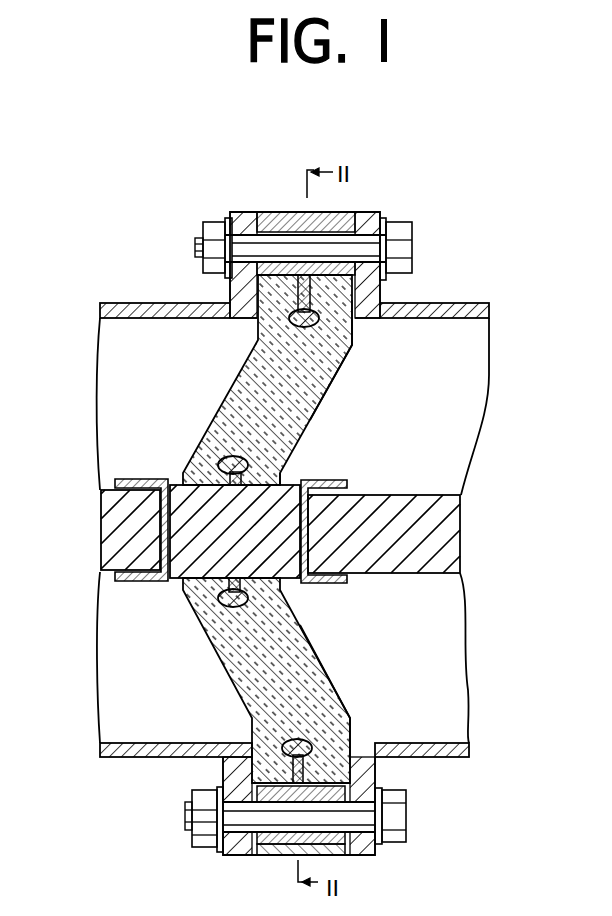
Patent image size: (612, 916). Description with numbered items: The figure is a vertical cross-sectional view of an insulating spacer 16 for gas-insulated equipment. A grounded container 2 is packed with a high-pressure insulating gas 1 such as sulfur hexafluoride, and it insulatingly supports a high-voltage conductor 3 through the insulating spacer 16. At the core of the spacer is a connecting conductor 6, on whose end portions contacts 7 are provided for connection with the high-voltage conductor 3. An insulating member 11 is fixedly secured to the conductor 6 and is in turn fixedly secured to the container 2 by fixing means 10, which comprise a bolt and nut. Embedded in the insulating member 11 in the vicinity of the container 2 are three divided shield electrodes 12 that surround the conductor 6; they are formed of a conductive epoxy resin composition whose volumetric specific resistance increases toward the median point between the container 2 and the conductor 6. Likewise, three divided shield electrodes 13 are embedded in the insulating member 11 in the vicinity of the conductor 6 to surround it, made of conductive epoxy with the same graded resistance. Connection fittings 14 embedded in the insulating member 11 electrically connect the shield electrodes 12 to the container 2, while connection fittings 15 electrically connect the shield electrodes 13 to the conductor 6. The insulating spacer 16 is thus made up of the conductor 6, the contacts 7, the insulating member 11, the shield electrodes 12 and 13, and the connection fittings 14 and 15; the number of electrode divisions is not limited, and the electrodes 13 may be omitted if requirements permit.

The high-pressure insulating gas 1 is at (455, 333).
The grounded container 2 is at (150, 303).
The high-voltage conductor 3 is at (103, 490).
The connecting conductor 6 is at (190, 600).
The contacts 7 is at (140, 478).
The fixing means 10 is at (213, 222).
The insulating member 11 is at (243, 370).
The divided shield electrodes 12 is at (348, 348).
The divided shield electrodes 13 is at (227, 445).
The connection fittings 14 is at (287, 262).
The connection fittings 15 is at (283, 473).
The insulating spacer 16 is at (338, 211).